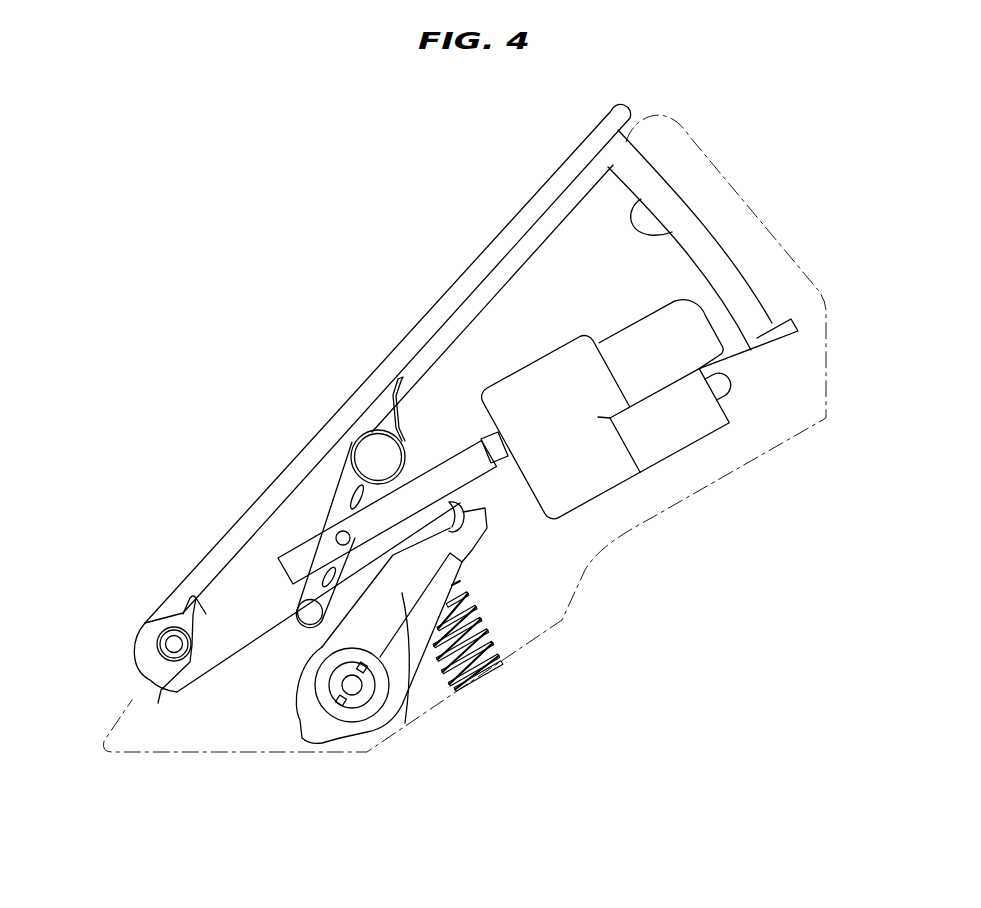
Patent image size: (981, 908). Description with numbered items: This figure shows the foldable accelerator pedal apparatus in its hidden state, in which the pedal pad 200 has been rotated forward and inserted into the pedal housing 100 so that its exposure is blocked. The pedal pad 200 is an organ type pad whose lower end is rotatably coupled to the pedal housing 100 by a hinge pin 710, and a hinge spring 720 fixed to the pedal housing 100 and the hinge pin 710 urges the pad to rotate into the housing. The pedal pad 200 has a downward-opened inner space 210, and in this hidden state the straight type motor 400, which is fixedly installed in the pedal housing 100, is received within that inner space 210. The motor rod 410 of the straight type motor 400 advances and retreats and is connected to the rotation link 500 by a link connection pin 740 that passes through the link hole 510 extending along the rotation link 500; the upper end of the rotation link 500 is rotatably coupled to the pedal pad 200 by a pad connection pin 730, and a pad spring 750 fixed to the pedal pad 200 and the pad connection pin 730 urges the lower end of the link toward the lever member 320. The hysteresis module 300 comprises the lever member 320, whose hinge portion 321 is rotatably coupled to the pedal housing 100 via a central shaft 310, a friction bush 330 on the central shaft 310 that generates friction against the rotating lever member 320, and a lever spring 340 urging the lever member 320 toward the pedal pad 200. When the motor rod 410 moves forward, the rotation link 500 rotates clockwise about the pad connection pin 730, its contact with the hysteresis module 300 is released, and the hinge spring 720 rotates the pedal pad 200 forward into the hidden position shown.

The pedal housing 100 is at (770, 231).
The pedal pad 200 is at (482, 258).
The inner space 210 is at (670, 233).
The hysteresis module 300 is at (405, 721).
The central shaft 310 is at (347, 684).
The lever member 320 is at (413, 690).
The hinge portion 321 is at (367, 732).
The friction bush 330 is at (338, 715).
The lever spring 340 is at (488, 660).
The straight type motor 400 is at (690, 428).
The motor rod 410 is at (477, 463).
The rotation link 500 is at (330, 527).
The link hole 510 is at (352, 500).
The hinge pin 710 is at (168, 643).
The hinge spring 720 is at (160, 667).
The pad connection pin 730 is at (378, 458).
The link connection pin 740 is at (338, 537).
The pad spring 750 is at (383, 404).